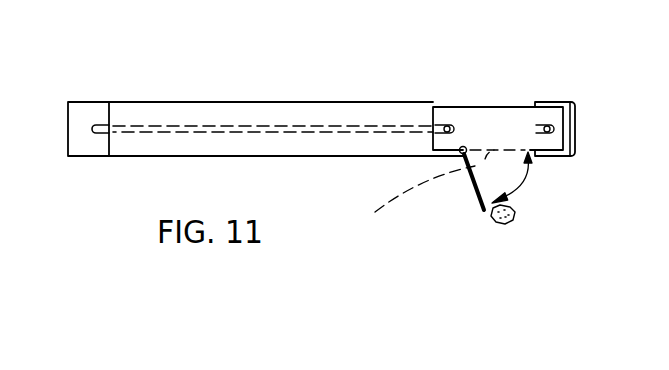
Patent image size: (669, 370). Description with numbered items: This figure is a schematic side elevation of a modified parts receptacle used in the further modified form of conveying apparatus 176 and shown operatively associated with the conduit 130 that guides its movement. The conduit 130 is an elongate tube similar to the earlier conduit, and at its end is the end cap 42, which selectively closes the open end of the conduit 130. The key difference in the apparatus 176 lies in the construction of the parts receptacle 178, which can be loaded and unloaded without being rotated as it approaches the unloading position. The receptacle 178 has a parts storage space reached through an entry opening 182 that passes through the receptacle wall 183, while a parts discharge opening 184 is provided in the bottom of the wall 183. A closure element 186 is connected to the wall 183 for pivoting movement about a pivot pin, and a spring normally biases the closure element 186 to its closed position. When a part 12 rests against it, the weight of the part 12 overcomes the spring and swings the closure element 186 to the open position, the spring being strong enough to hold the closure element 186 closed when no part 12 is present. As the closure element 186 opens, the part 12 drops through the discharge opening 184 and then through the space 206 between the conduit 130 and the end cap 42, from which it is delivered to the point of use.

The part 12 is at (512, 222).
The end cap 42 is at (578, 117).
The conduit 130 is at (205, 102).
The apparatus for conveying parts 176 is at (522, 57).
The parts receptacle 178 is at (485, 107).
The entry opening 182 is at (505, 107).
The receptacle wall 183 is at (470, 107).
The parts discharge opening 184 is at (521, 176).
The closure element 186 is at (473, 189).
The space 206 is at (437, 194).